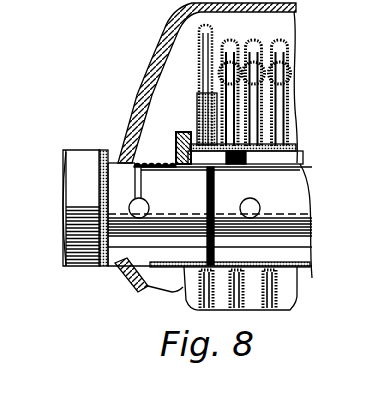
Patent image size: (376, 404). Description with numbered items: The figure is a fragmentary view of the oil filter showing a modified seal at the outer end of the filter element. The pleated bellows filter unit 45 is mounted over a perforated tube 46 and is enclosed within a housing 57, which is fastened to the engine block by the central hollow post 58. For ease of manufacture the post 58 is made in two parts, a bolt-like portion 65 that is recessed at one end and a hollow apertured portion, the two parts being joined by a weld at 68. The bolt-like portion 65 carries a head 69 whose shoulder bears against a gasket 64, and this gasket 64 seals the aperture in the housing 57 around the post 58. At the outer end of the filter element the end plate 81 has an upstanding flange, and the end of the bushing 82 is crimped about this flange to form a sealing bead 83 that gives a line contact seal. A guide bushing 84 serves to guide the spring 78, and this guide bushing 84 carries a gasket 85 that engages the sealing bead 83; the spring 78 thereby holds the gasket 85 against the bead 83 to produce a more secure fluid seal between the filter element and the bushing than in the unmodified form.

The bellows filter unit 45 is at (283, 42).
The tube 46 is at (302, 275).
The housing 57 is at (143, 90).
The hollow post 58 is at (300, 178).
The gasket 64 is at (95, 165).
The bolt-like portion 65 is at (122, 268).
The weld 68 is at (213, 200).
The head 69 is at (66, 240).
The spring 78 is at (131, 160).
The end plate 81 is at (198, 74).
The bushing 82 is at (224, 165).
The sealing bead 83 is at (197, 133).
The guide bushing 84 is at (146, 161).
The gasket 85 is at (178, 292).